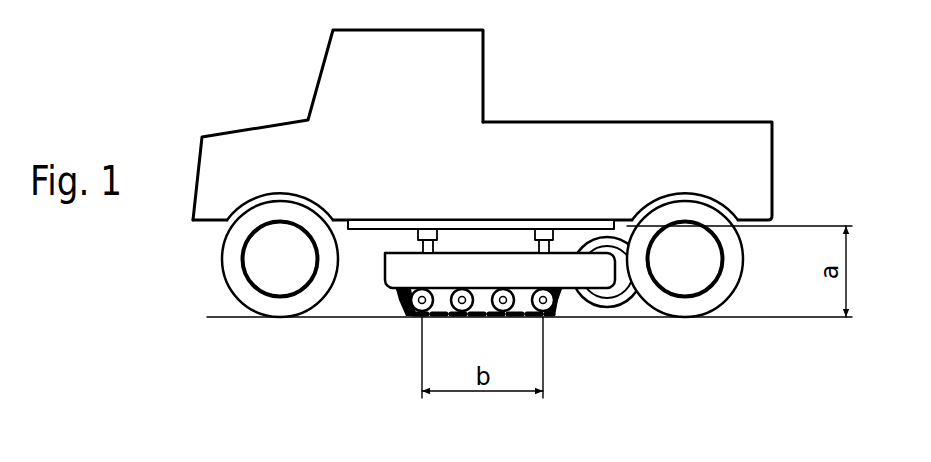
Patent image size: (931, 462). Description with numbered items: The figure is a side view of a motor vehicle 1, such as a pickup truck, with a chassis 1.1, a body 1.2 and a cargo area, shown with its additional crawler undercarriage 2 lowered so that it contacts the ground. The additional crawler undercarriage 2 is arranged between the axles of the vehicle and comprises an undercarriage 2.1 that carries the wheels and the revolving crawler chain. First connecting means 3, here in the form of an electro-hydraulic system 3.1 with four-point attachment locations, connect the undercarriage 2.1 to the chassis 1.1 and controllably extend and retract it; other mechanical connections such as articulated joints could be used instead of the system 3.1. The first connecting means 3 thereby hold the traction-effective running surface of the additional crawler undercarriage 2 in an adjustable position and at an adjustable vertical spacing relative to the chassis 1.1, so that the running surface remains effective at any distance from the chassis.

The motor vehicle 1 is at (464, 207).
The chassis 1.1 is at (365, 225).
The body 1.2 is at (462, 112).
The additional crawler undercarriage 2 is at (564, 297).
The undercarriage 2.1 is at (537, 268).
The first connecting means 3 is at (443, 238).
The electro-hydraulic system 3.1 is at (557, 228).